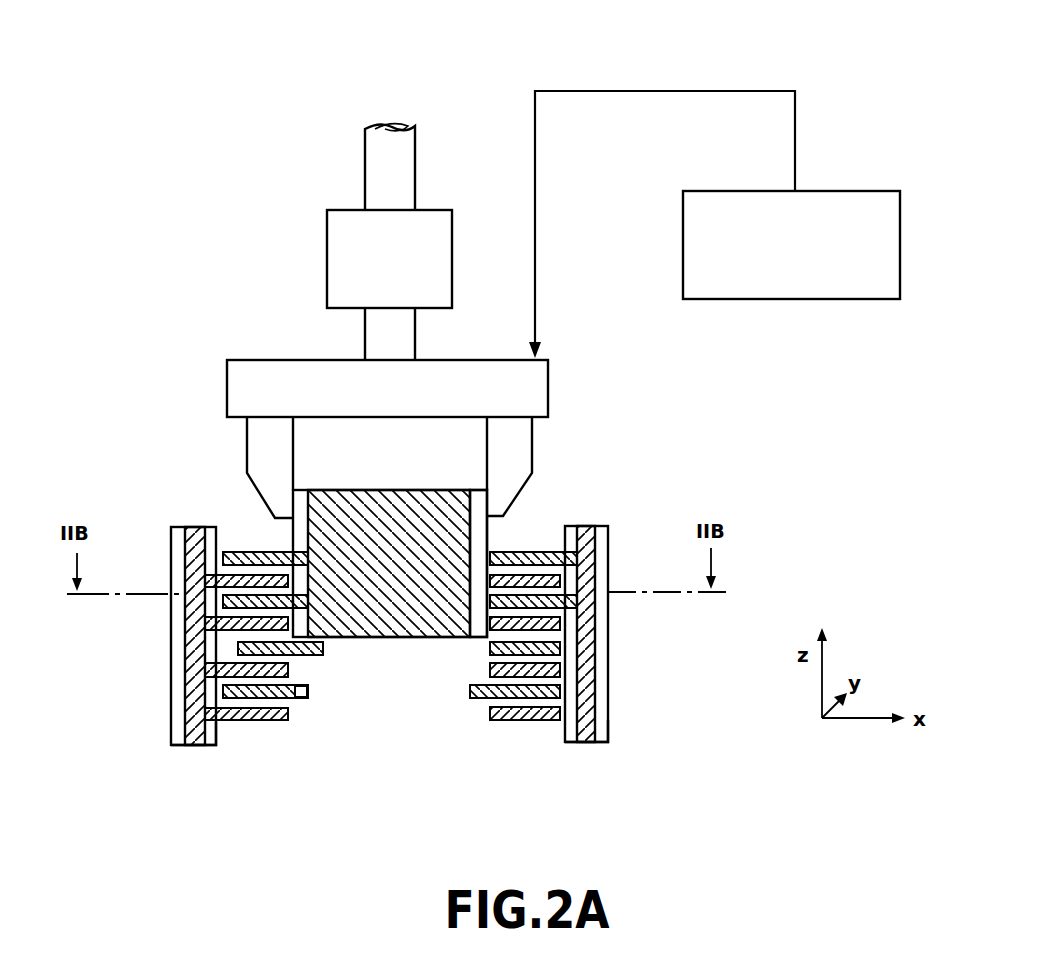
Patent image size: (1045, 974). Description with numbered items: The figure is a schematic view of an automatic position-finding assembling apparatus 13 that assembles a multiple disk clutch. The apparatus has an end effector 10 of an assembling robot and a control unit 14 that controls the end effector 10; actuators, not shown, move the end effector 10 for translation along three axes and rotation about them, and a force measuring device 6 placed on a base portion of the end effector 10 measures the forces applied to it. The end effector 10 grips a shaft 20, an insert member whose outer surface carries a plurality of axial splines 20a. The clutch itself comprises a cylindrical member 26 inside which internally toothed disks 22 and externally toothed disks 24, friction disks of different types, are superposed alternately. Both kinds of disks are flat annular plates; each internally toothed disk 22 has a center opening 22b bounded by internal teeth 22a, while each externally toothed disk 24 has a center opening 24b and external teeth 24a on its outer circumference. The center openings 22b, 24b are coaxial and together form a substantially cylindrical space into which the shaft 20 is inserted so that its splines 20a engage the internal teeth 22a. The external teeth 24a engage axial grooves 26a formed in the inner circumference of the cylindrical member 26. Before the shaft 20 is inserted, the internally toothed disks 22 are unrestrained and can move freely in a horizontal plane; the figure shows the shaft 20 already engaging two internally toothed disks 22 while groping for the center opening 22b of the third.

The force measuring device 6 is at (452, 260).
The end effector 10 is at (548, 385).
The automatic position-finding assembling apparatus 13 is at (653, 82).
The control unit 14 is at (793, 299).
The shaft 20 is at (460, 552).
The axial splines 20a is at (473, 545).
The internally toothed disk 22 is at (577, 554).
The internal teeth 22a is at (305, 683).
The center opening 22b is at (310, 694).
The externally toothed disk 24 is at (212, 580).
The external teeth 24a is at (213, 722).
The center opening 24b is at (289, 716).
The cylindrical member 26 is at (608, 727).
The axial grooves 26a is at (572, 746).